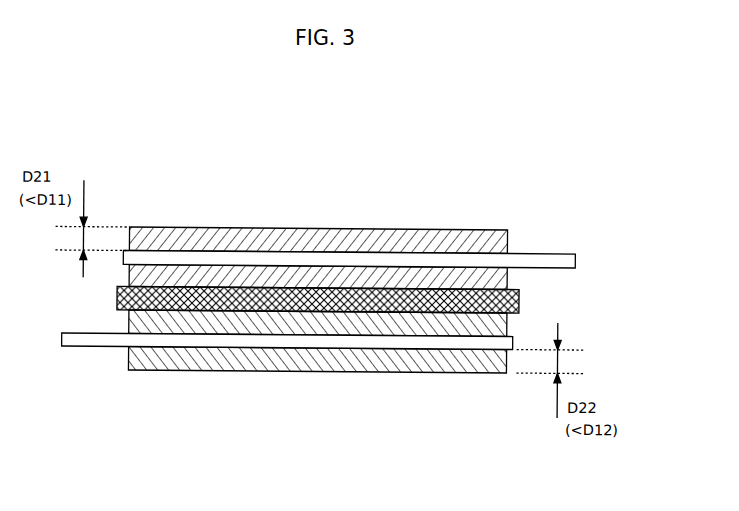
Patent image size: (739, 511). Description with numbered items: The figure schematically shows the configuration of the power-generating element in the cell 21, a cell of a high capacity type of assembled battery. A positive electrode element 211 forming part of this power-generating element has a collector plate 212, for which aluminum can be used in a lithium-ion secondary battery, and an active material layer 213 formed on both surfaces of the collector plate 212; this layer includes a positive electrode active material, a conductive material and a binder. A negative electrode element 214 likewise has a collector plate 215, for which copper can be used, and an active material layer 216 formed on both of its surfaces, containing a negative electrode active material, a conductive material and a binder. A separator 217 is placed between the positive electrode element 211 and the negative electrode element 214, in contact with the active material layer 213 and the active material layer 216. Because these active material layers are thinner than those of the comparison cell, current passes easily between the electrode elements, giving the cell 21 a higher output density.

The cell 21 is at (361, 304).
The positive electrode element 211 is at (349, 213).
The collector plate 212 is at (437, 172).
The active material layer 213 is at (463, 280).
The negative electrode element 214 is at (287, 390).
The collector plate 215 is at (213, 432).
The active material layer 216 is at (175, 322).
The separator 217 is at (518, 305).